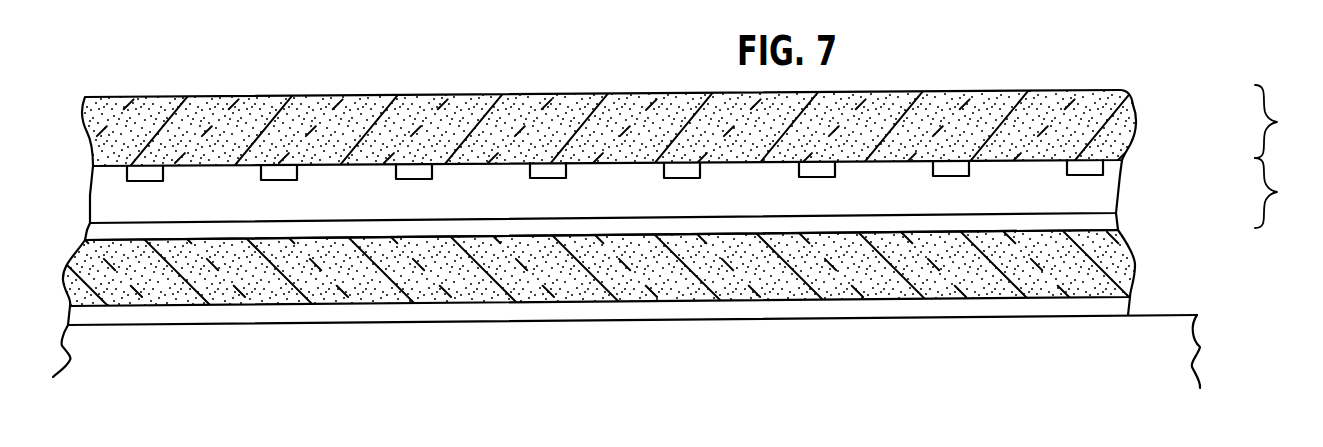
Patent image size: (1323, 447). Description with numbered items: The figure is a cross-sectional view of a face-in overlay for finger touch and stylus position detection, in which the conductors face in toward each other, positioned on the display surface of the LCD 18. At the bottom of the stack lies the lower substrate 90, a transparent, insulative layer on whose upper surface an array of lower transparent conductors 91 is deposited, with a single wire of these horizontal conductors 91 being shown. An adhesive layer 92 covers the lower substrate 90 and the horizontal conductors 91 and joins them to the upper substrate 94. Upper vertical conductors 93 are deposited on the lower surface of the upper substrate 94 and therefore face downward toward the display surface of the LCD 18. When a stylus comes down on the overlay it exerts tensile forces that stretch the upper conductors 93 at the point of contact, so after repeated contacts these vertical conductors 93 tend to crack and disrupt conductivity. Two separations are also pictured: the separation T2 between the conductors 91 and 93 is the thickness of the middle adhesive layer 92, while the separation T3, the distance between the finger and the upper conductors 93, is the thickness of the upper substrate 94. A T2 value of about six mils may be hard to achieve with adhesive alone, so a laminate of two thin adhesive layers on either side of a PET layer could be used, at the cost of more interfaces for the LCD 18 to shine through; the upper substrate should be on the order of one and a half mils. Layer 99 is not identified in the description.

The upper substrate 94 is at (1113, 145).
The upper vertical conductors 93 is at (1105, 163).
The adhesive layer 92 is at (1113, 190).
The lower transparent conductors 91 is at (1110, 223).
The lower substrate 90 is at (1131, 268).
The adhesive layer 99 is at (1113, 305).
The LCD 18 is at (1205, 342).
The separation T3 is at (1281, 121).
The separation T2 is at (1281, 193).